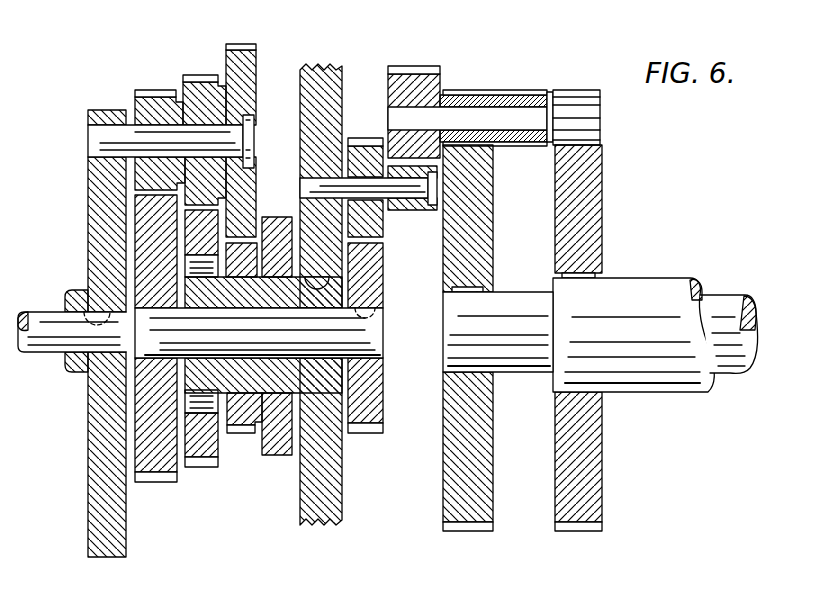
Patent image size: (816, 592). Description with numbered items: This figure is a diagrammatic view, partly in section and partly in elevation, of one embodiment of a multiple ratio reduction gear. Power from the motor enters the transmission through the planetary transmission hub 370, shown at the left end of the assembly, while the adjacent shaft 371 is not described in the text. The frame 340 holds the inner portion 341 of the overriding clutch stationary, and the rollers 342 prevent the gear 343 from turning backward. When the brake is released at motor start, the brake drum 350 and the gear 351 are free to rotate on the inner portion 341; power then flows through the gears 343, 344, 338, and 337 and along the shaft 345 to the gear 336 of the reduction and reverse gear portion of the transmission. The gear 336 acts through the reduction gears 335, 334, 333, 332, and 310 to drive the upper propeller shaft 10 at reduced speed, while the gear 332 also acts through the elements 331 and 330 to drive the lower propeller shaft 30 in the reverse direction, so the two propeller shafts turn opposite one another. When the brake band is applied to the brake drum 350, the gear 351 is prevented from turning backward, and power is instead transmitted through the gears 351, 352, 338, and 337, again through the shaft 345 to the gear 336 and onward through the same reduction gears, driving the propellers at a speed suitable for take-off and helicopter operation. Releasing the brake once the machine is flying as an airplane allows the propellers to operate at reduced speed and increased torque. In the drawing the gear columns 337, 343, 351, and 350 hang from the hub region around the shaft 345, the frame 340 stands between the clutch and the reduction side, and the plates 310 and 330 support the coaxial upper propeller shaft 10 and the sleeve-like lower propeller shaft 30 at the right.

The upper propeller shaft 10 is at (720, 295).
The lower propeller shaft 30 is at (645, 277).
The reduction gear 310 is at (443, 514).
The reverse drive gear 330 is at (605, 455).
The reverse drive gear 331 is at (600, 118).
The reduction gear 332 is at (497, 90).
The reduction gear 333 is at (442, 78).
The reduction gear 334 is at (418, 210).
The reduction gear 335 is at (361, 138).
The gear 336 is at (370, 433).
The gear 337 is at (155, 483).
The gear 338 is at (135, 93).
The frame 340 is at (312, 527).
The inner portion of the overriding clutch 341 is at (176, 372).
The rollers 342 is at (183, 403).
The gear 343 is at (207, 468).
The gear 344 is at (185, 82).
The shaft 345 is at (200, 333).
The brake drum 350 is at (276, 457).
The gear 351 is at (245, 436).
The gear 352 is at (226, 50).
The planetary transmission hub 370 is at (88, 280).
The shaft 371 is at (88, 135).